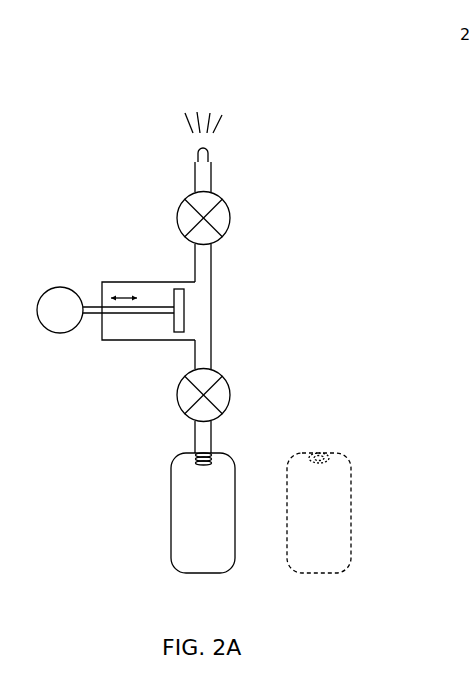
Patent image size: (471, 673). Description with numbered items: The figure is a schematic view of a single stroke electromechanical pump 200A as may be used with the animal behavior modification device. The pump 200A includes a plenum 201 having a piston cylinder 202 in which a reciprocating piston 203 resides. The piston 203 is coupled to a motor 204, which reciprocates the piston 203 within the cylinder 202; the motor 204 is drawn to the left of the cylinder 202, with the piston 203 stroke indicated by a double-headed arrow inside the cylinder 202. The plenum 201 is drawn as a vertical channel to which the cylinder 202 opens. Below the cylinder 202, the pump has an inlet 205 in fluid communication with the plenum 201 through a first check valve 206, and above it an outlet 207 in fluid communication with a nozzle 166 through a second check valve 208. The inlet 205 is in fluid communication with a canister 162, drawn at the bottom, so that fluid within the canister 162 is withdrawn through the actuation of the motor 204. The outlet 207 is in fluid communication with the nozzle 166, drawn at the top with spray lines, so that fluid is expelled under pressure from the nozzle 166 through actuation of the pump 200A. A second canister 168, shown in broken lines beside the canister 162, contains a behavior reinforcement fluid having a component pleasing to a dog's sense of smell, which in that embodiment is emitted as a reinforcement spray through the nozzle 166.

The single stroke electromechanical pump 200A is at (128, 98).
The nozzle 166 is at (208, 157).
The second check valve 208 is at (230, 207).
The outlet 207 is at (212, 275).
The plenum 201 is at (212, 310).
The inlet 205 is at (212, 340).
The first check valve 206 is at (230, 395).
The motor 204 is at (58, 287).
The reciprocating piston 203 is at (143, 305).
The piston cylinder 202 is at (112, 342).
The canister 162 is at (237, 480).
The second canister 168 is at (352, 482).